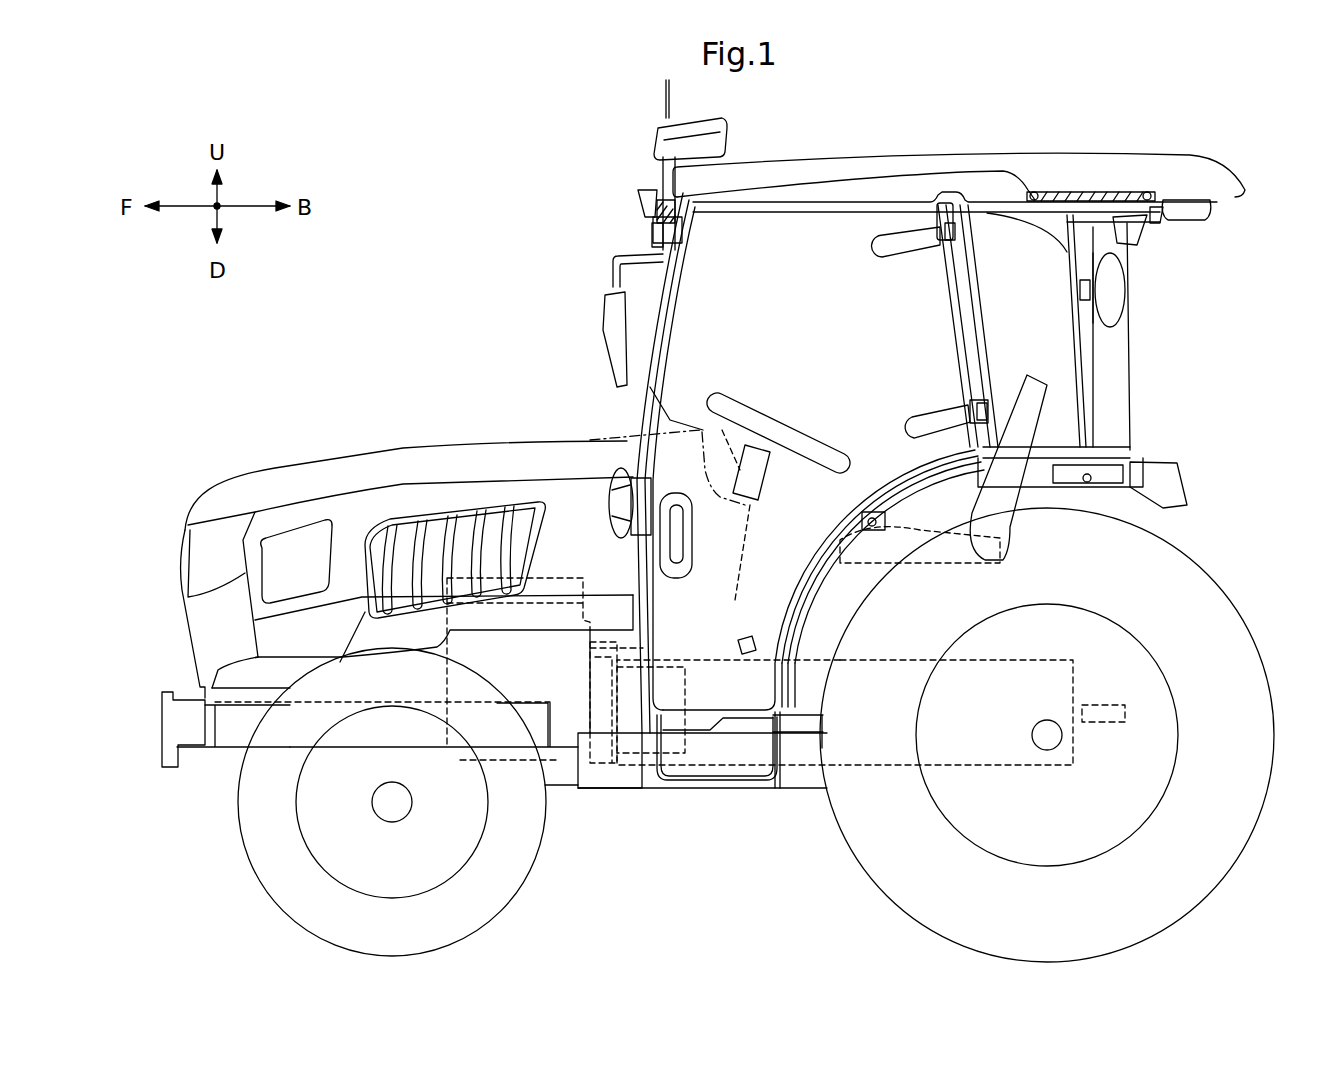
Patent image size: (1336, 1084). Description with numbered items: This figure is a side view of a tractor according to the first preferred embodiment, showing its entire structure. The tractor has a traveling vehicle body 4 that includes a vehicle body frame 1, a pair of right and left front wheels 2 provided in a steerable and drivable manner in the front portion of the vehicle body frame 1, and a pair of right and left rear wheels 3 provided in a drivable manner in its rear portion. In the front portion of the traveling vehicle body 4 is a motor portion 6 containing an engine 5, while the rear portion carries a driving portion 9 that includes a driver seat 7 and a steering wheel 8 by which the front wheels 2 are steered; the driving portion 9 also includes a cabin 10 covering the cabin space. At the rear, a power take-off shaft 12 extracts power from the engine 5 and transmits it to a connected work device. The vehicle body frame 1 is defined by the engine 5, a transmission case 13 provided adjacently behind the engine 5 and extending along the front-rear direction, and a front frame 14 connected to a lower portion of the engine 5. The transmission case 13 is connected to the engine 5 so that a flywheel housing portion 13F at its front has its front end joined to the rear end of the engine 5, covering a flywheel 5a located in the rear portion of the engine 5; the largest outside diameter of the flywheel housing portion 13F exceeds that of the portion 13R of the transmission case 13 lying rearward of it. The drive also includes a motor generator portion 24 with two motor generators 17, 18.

The vehicle body frame 1 is at (773, 790).
The front wheels 2 is at (276, 878).
The rear wheels 3 is at (1200, 887).
The traveling vehicle body 4 is at (160, 773).
The engine 5 is at (568, 503).
The flywheel 5a is at (607, 792).
The motor portion 6 is at (397, 448).
The driver seat 7 is at (1023, 377).
The steering wheel 8 is at (775, 430).
The driving portion 9 is at (869, 434).
The cabin 10 is at (1060, 162).
The power take-off shaft 12 is at (1097, 725).
The transmission case 13 is at (845, 729).
The flywheel housing portion 13F is at (695, 650).
The portion of the transmission case rearward of the flywheel housing portion 13R is at (905, 655).
The front frame 14 is at (232, 740).
The motor generator 17 is at (641, 825).
The motor generator 18 is at (641, 825).
The motor generator portion 24 is at (652, 795).